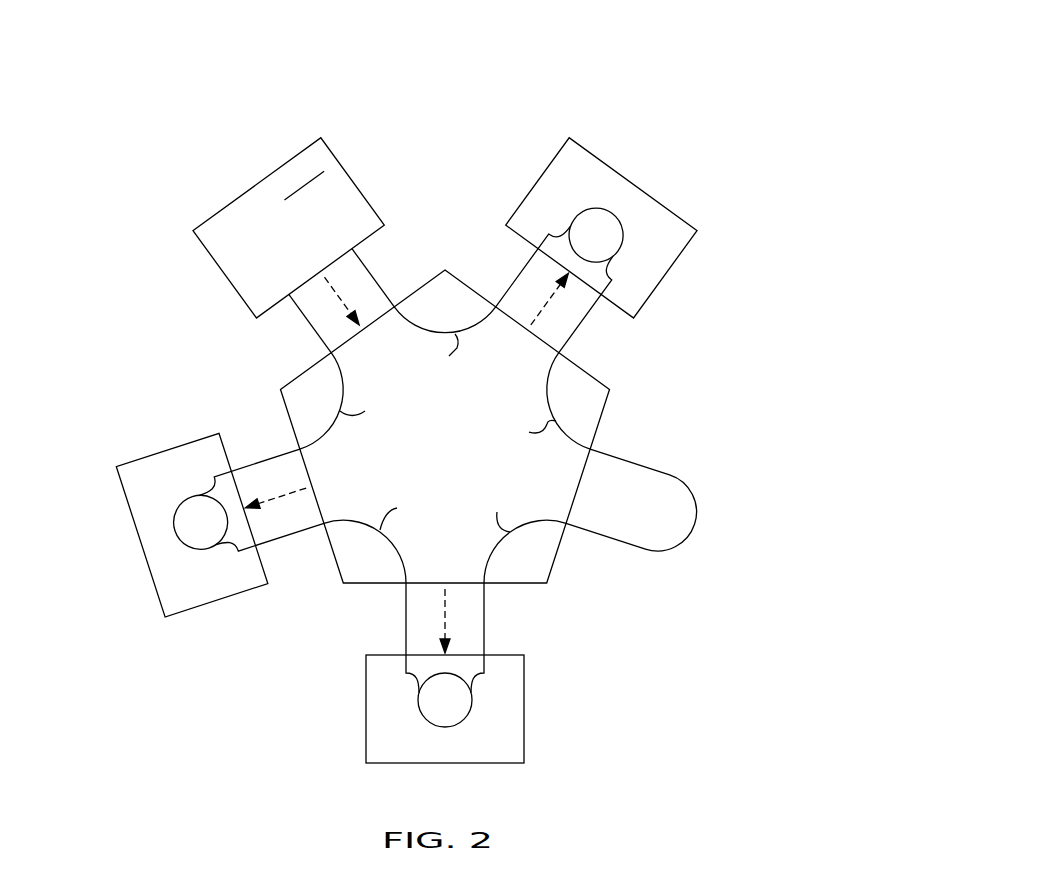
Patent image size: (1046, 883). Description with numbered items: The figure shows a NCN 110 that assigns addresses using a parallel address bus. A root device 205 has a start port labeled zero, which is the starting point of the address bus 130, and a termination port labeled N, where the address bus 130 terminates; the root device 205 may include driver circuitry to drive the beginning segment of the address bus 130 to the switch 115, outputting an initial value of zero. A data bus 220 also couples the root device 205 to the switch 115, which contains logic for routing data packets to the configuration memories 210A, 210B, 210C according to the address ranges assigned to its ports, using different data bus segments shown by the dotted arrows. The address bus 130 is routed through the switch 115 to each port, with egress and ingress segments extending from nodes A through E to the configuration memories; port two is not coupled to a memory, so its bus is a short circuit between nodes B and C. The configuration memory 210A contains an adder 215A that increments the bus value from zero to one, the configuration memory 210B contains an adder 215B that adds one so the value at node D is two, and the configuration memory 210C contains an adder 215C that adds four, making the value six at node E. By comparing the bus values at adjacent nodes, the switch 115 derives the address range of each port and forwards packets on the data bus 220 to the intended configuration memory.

The NCN 110 is at (792, 133).
The switch 115 is at (587, 373).
The address bus 130 is at (368, 270).
The root device 205 is at (308, 255).
The configuration memory 210A is at (588, 152).
The configuration memory 210B is at (523, 742).
The configuration memory 210C is at (210, 603).
The adder 215A is at (622, 240).
The adder 215B is at (470, 709).
The adder 215C is at (185, 500).
The data bus 220 is at (318, 287).